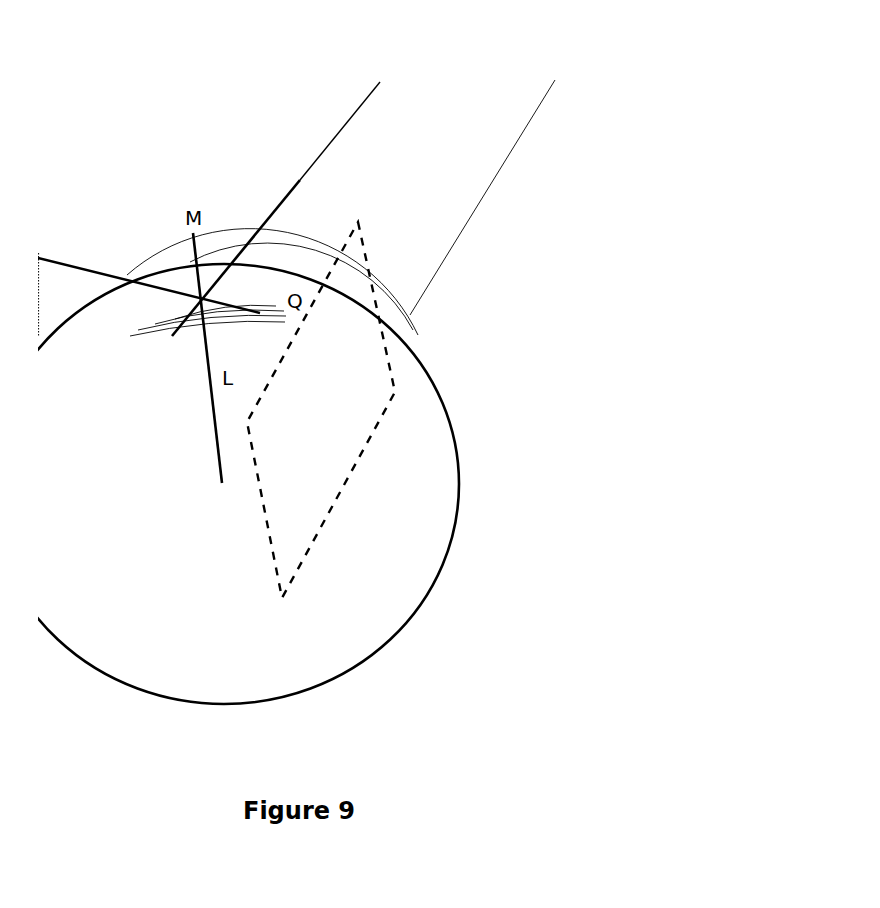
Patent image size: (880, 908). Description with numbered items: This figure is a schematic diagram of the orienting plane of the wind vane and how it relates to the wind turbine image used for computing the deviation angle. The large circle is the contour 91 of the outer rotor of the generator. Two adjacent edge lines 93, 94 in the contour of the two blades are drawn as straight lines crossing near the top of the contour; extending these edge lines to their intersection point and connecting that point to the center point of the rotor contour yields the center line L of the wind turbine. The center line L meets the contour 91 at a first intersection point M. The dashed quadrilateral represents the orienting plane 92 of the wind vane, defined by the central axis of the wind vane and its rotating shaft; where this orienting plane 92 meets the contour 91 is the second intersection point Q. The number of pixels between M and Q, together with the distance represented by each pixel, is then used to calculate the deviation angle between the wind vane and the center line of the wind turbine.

The contour of the outer rotor of the generator 91 is at (445, 407).
The orienting plane of the wind vane 92 is at (312, 535).
The adjacent edge line 93 is at (57, 260).
The adjacent edge line 94 is at (319, 157).